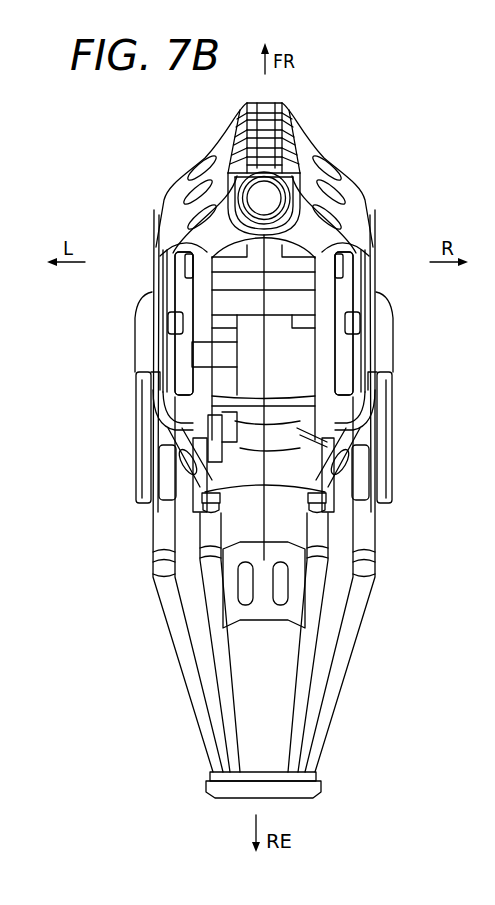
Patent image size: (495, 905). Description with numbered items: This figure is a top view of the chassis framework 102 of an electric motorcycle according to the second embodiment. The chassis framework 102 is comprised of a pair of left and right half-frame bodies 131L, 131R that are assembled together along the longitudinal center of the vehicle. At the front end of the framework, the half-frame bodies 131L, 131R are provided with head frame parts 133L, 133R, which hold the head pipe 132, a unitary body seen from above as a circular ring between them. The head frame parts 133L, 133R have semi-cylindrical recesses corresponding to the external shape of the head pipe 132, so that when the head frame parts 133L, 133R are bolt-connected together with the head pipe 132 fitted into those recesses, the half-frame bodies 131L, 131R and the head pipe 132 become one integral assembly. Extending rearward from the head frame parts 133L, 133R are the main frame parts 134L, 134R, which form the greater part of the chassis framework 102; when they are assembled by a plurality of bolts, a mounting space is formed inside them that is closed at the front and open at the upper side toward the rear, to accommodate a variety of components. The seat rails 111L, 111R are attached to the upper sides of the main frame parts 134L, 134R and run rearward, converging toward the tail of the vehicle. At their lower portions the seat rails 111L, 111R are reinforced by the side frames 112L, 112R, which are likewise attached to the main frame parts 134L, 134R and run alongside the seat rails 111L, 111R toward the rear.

The chassis framework 102 is at (378, 78).
The head pipe 132 is at (279, 181).
The left head frame part 133L is at (222, 162).
The right head frame part 133R is at (308, 173).
The left half-frame body 131L is at (158, 313).
The right half-frame body 131R is at (372, 313).
The left main frame part 134L is at (131, 323).
The right main frame part 134R is at (398, 323).
The left seat rail 111L is at (210, 583).
The right seat rail 111R is at (313, 585).
The left side frame 112L is at (181, 630).
The right side frame 112R is at (347, 625).